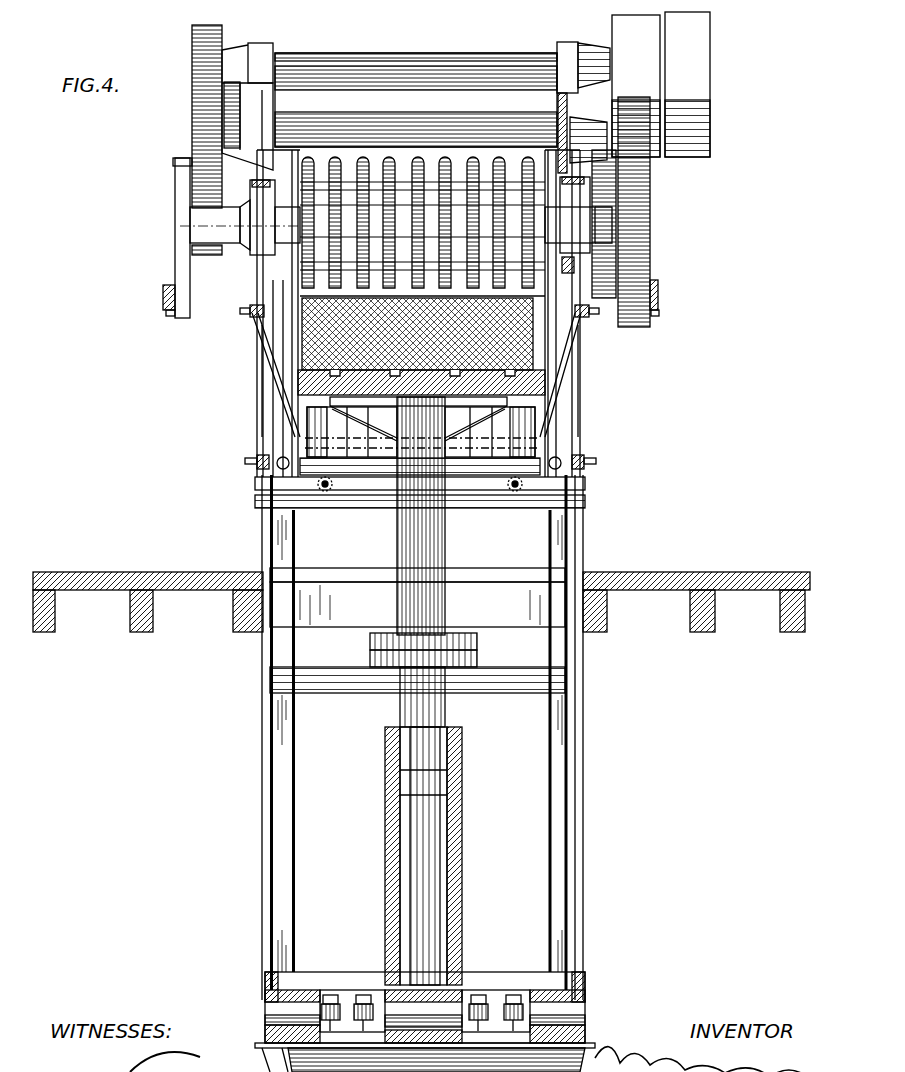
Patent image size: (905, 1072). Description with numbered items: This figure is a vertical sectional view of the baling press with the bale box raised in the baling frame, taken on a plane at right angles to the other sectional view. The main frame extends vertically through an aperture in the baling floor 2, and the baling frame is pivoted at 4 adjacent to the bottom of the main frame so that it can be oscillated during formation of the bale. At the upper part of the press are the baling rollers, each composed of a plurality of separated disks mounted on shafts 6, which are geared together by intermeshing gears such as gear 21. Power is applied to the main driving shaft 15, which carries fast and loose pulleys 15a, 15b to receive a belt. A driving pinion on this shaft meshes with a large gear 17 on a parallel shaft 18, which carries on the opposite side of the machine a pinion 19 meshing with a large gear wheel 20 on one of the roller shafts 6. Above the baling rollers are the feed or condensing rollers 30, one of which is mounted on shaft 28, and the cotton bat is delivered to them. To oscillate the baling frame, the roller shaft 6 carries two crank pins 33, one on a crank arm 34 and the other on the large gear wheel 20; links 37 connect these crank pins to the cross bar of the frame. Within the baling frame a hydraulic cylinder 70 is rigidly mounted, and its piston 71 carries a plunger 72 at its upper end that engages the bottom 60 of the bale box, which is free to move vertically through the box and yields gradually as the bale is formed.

The baling floor 2 is at (178, 570).
The pivot 4 is at (565, 1013).
The shaft 6 is at (200, 228).
The main driving shaft 15 is at (478, 52).
The fast pulley 15a is at (662, 143).
The loose pulley 15b is at (712, 143).
The large gear 17 is at (191, 42).
The shaft 18 is at (556, 118).
The pinion 19 is at (650, 98).
The large gear wheel 20 is at (651, 246).
The gear 21 is at (606, 298).
The shaft 28 is at (233, 82).
The feed or condensing roller 30 is at (416, 118).
The crank pin 33 is at (163, 296).
The crank arm 34 is at (184, 270).
The link 37 is at (166, 310).
The bottom of the bale box 60 is at (300, 381).
The hydraulic cylinder 70 is at (430, 911).
The piston 71 is at (410, 543).
The plunger 72 is at (418, 419).